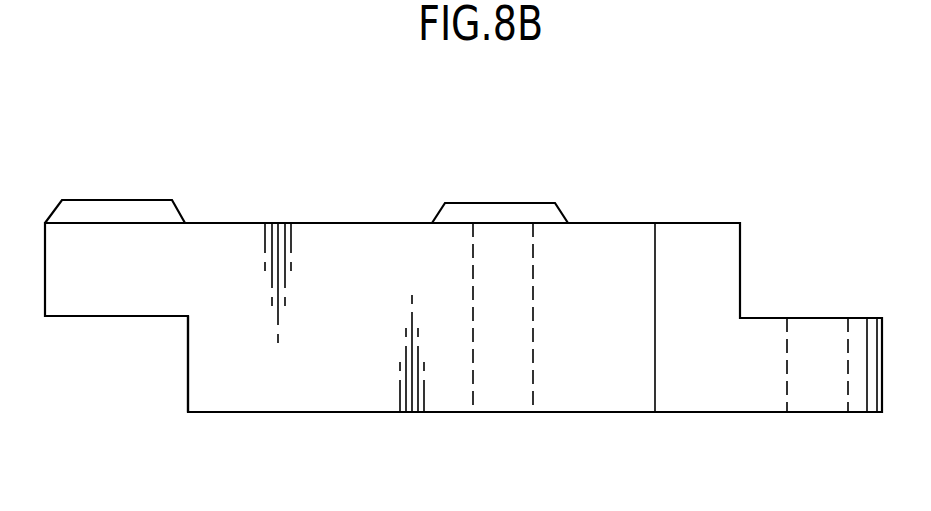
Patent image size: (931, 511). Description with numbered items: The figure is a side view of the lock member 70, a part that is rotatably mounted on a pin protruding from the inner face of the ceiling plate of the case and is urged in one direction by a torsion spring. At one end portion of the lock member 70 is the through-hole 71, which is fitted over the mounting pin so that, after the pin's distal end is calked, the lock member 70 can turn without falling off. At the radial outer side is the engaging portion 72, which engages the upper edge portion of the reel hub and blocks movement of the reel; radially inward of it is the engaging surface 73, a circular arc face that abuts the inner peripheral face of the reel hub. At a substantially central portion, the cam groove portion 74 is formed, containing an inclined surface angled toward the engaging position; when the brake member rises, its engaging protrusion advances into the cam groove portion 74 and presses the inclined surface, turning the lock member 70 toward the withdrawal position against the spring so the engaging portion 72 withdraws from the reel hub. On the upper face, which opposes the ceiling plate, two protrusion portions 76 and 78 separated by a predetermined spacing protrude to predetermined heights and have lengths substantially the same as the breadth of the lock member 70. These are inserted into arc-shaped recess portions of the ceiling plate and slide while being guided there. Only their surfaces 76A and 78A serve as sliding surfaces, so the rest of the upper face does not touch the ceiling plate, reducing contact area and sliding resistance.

The lock member 70 is at (686, 195).
The through-hole 71 is at (788, 377).
The engaging portion 72 is at (97, 317).
The engaging surface 73 is at (188, 365).
The cam groove portion 74 is at (475, 353).
The protrusion portion 76 is at (445, 202).
The surface of protrusion portion 76A is at (500, 203).
The protrusion portion 78 is at (62, 199).
The surface of protrusion portion 78A is at (115, 200).